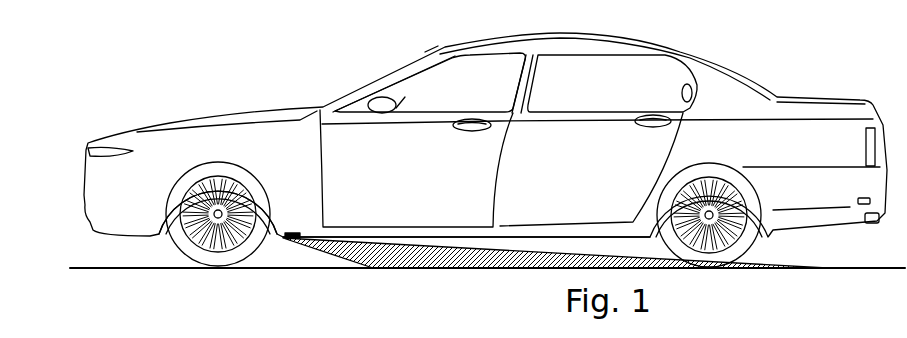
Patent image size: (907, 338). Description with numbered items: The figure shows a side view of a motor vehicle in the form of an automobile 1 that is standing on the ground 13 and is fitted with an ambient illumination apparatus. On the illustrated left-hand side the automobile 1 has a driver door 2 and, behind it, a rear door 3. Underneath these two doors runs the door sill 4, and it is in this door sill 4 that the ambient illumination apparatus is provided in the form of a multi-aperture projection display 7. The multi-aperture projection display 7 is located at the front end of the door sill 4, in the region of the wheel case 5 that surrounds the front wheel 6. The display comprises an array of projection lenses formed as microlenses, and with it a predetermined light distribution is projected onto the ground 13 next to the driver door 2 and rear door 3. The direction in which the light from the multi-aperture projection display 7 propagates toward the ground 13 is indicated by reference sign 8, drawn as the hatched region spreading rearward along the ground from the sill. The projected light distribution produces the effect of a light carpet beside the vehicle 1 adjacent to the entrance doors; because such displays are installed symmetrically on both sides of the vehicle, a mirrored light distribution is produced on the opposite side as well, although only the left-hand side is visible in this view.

The automobile 1 is at (760, 73).
The driver door 2 is at (425, 138).
The rear door 3 is at (560, 143).
The door sill 4 is at (365, 232).
The wheel case 5 is at (213, 152).
The wheel 6 is at (207, 268).
The multi-aperture projection display 7 is at (296, 232).
The direction of propagation of the light 8 is at (338, 257).
The ground 13 is at (853, 269).